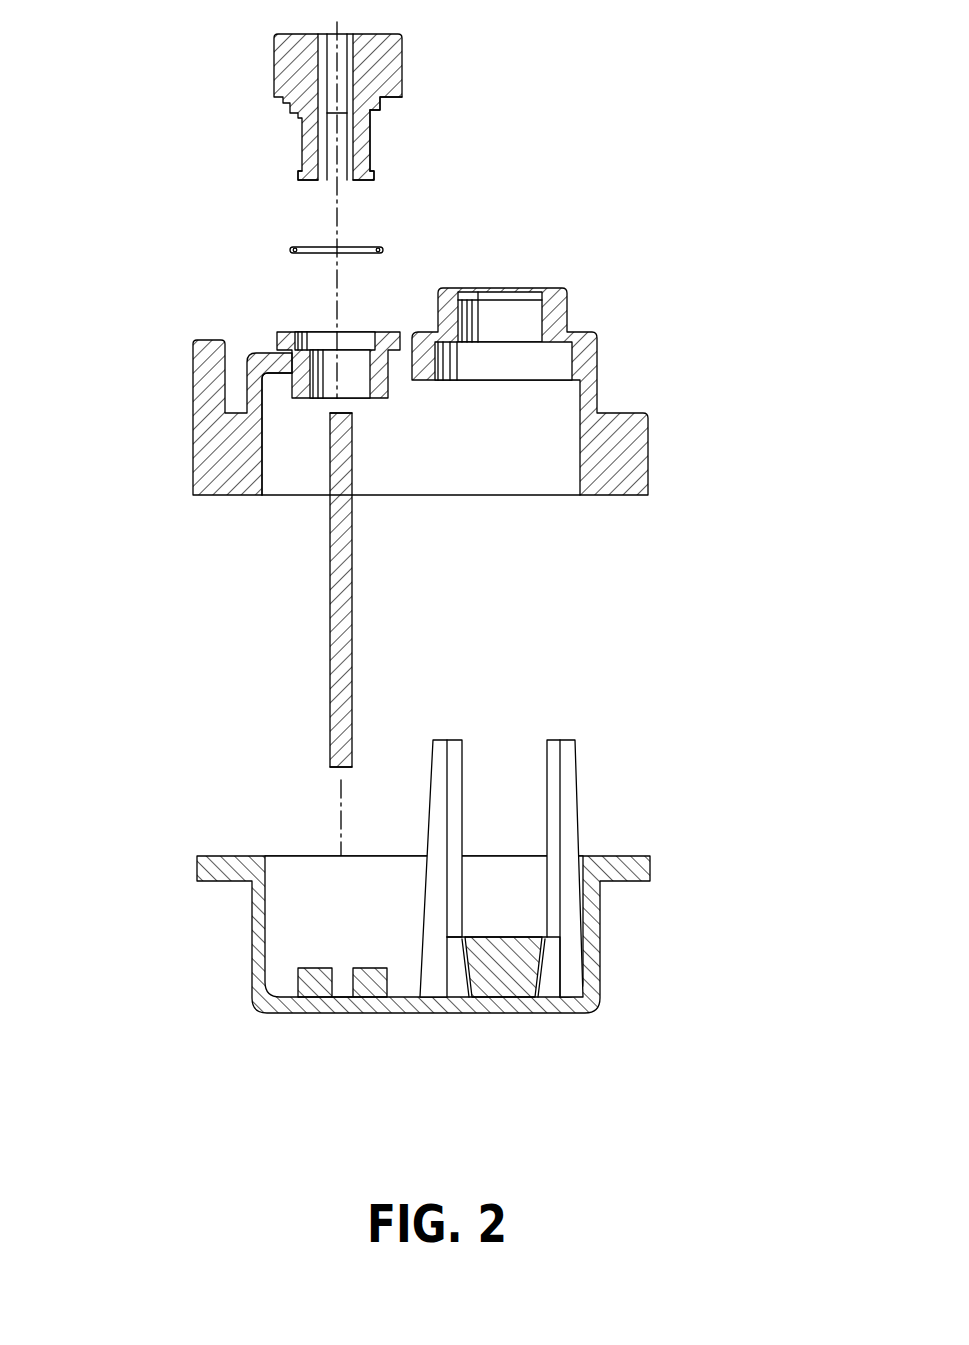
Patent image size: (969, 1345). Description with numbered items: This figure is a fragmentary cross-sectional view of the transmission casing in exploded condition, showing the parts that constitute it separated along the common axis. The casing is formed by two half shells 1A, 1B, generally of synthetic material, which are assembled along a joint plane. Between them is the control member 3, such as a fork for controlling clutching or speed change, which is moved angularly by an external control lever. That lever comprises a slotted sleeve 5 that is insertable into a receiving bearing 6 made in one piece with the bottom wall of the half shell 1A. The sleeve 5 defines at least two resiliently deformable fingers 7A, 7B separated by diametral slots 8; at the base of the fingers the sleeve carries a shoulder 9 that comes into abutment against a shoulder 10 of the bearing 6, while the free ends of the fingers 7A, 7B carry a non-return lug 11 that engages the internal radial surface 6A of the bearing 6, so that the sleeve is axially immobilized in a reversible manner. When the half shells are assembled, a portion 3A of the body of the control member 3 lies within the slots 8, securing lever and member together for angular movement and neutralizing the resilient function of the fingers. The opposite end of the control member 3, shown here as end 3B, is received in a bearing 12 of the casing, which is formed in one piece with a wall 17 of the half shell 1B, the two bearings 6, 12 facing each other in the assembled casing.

The half shell 1A is at (648, 428).
The half shell 1B is at (652, 873).
The control member 3 is at (353, 617).
The portion of the body of the control member 3A is at (326, 432).
The rod lower end 3B is at (330, 738).
The slotted sleeve 5 is at (403, 48).
The receiving bearing 6 is at (307, 360).
The internal radial surface 6A is at (303, 402).
The finger 7A is at (303, 176).
The finger 7B is at (372, 140).
The diametral slots 8 is at (336, 174).
The shoulder 9 is at (373, 104).
The shoulder 10 is at (377, 333).
The non-return lug 11 is at (373, 172).
The bearing 12 is at (318, 990).
The wall 17 is at (412, 998).